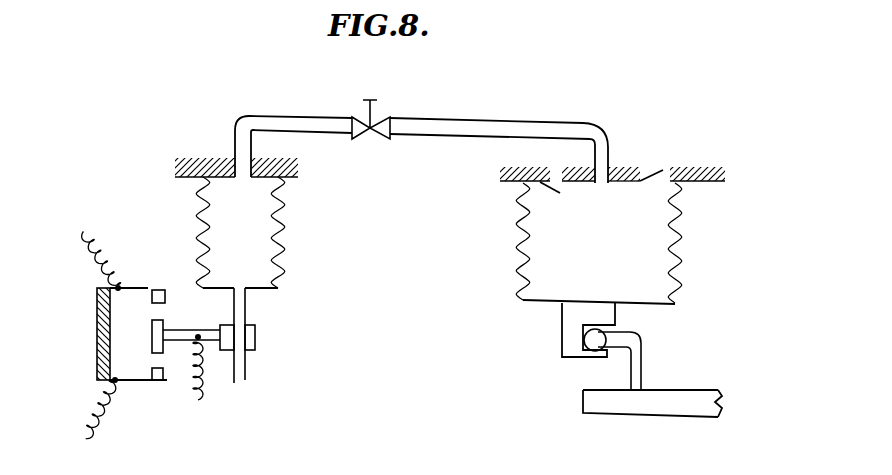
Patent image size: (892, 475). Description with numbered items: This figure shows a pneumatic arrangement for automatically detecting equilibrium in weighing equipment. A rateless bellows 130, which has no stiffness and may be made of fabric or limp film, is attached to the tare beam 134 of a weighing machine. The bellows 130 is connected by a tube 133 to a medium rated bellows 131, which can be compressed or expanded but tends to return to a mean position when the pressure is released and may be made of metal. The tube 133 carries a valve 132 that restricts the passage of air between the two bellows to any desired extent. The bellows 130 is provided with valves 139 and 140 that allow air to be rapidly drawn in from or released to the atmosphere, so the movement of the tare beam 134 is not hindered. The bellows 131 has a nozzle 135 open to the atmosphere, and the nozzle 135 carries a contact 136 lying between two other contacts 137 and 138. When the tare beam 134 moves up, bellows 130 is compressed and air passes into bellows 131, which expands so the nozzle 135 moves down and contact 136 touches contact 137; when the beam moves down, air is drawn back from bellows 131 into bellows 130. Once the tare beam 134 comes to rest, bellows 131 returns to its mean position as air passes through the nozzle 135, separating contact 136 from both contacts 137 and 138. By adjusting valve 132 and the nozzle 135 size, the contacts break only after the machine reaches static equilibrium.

The rateless bellows 130 is at (660, 282).
The medium rated bellows 131 is at (268, 267).
The valve 132 is at (365, 113).
The tube 133 is at (607, 143).
The tare beam 134 is at (703, 408).
The nozzle 135 is at (238, 375).
The contact 136 is at (213, 342).
The contact 137 is at (167, 385).
The contact 138 is at (160, 290).
The valve 139 is at (558, 196).
The valve 140 is at (673, 152).